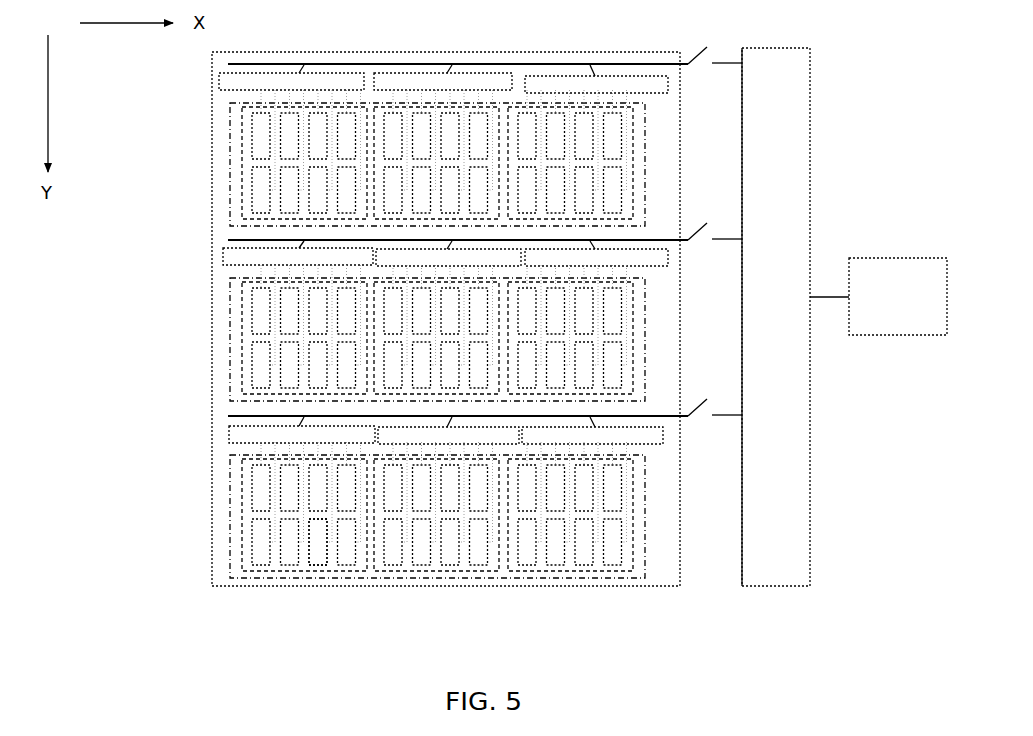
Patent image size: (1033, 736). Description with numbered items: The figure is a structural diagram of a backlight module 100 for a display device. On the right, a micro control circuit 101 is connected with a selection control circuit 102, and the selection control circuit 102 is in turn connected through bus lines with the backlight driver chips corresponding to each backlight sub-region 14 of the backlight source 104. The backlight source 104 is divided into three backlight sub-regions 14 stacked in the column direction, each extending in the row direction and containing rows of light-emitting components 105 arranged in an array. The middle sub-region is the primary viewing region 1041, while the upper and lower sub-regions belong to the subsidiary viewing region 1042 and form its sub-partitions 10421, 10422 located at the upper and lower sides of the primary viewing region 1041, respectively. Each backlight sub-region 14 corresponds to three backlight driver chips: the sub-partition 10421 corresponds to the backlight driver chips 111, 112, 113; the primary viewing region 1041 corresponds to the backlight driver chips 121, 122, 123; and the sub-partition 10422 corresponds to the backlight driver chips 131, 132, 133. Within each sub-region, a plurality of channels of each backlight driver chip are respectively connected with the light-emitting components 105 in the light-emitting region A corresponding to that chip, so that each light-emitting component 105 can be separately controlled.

The backlight module 100 is at (787, 15).
The micro control circuit 101 is at (878, 296).
The selection control circuit 102 is at (776, 317).
The backlight source 104 is at (415, 52).
The light-emitting component 105 is at (317, 532).
The backlight driver chip 111 is at (291, 77).
The backlight driver chip 112 is at (443, 77).
The backlight driver chip 113 is at (596, 79).
The backlight driver chip 121 is at (298, 253).
The backlight driver chip 122 is at (448, 253).
The backlight driver chip 123 is at (596, 253).
The backlight driver chip 131 is at (302, 430).
The backlight driver chip 132 is at (448, 430).
The backlight driver chip 133 is at (592, 430).
The backlight sub-region 14 is at (337, 334).
The primary viewing region 1041 is at (230, 339).
The subsidiary viewing region 1042 is at (337, 334).
The sub-partition 10421 is at (230, 162).
The sub-partition 10422 is at (230, 512).
The light-emitting region A is at (242, 308).